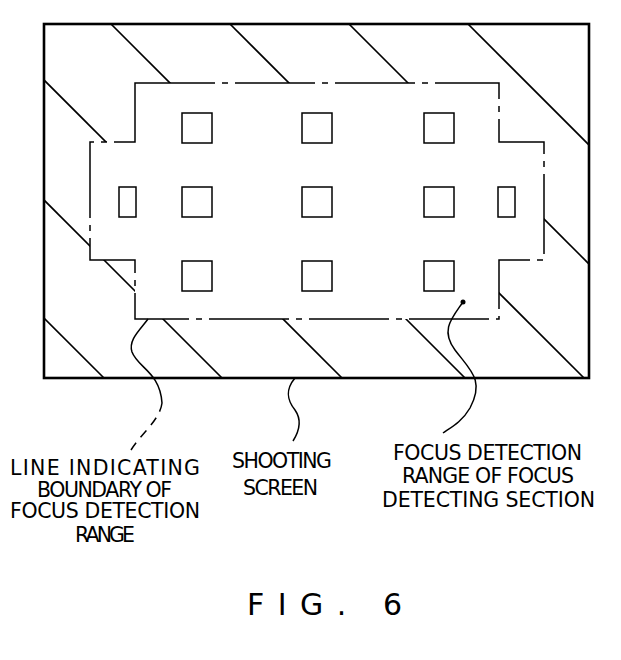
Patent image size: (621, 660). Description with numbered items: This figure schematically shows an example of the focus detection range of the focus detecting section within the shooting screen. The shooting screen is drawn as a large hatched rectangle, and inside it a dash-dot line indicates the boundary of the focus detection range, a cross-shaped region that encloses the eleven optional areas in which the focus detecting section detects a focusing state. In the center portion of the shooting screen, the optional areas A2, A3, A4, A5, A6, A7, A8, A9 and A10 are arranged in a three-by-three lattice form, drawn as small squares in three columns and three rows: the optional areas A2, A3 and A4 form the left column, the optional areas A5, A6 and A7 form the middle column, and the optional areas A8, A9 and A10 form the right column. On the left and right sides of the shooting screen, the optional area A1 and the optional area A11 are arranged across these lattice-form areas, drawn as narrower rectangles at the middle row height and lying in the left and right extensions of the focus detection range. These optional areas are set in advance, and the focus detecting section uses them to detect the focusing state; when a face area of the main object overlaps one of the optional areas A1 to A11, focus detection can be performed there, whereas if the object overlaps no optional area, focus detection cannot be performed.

The optional area A1 is at (119, 205).
The optional area A2 is at (182, 141).
The optional area A3 is at (182, 216).
The optional area A4 is at (182, 290).
The optional area A5 is at (302, 141).
The optional area A6 is at (302, 216).
The optional area A7 is at (302, 290).
The optional area A8 is at (424, 141).
The optional area A9 is at (424, 216).
The optional area A10 is at (424, 290).
The optional area A11 is at (498, 216).